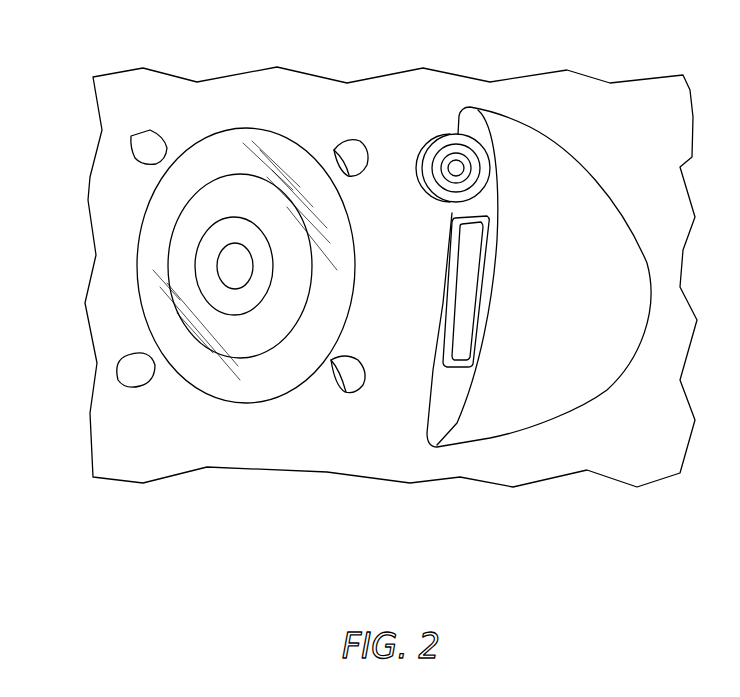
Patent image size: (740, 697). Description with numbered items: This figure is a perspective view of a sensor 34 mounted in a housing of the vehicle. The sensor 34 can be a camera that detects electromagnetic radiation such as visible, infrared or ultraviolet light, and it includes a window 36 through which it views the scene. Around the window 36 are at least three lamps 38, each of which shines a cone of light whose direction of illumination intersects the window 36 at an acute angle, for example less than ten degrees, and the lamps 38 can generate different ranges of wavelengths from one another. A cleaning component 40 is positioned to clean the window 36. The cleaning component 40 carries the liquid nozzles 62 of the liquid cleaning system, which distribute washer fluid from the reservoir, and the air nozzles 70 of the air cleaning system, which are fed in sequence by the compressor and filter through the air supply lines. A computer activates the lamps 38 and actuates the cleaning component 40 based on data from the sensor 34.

The sensor 34 is at (172, 247).
The window 36 is at (247, 405).
The lamps 38 is at (141, 129).
The cleaning component 40 is at (535, 120).
The liquid nozzles 62 is at (443, 168).
The air nozzles 70 is at (487, 270).